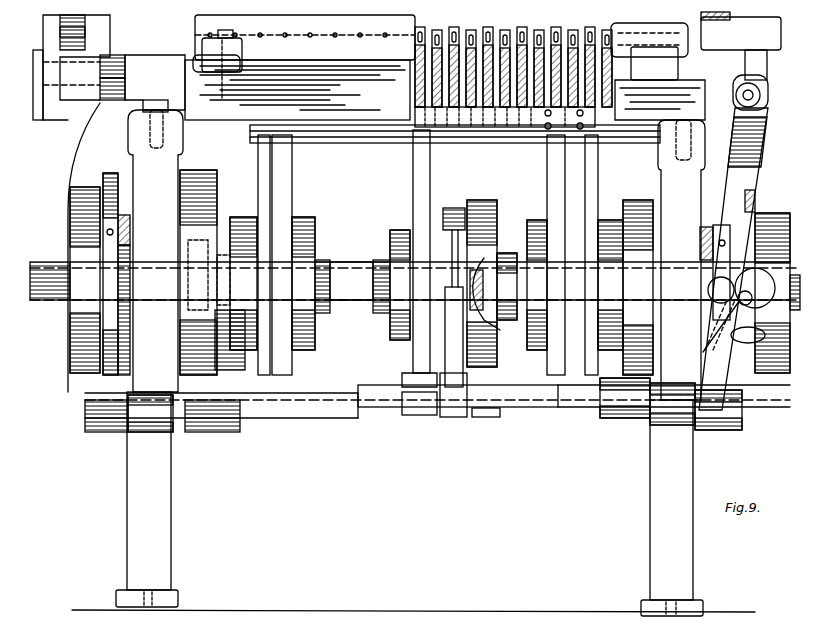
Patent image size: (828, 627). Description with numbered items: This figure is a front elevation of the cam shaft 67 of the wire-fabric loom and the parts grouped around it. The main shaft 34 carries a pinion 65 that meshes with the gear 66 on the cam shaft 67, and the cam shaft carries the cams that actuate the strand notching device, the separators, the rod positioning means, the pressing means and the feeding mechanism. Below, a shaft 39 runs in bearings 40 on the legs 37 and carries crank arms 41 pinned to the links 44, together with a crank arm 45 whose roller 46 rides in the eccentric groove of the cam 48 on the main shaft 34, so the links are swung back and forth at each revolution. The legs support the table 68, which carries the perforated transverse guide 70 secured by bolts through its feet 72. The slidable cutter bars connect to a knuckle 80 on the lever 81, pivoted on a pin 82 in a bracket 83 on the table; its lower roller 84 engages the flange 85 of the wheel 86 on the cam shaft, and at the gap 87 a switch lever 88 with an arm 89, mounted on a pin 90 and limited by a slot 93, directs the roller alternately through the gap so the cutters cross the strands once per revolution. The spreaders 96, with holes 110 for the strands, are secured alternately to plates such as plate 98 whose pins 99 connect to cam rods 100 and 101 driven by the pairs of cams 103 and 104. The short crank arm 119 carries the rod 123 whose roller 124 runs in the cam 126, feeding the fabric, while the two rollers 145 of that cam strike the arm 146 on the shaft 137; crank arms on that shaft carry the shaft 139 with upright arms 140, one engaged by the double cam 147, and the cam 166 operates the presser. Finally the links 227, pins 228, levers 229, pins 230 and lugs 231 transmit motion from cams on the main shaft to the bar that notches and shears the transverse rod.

The main shaft 34 is at (35, 302).
The legs 37 is at (409, 504).
The shaft 39 is at (310, 408).
The bearings 40 is at (157, 400).
The crank arms 41 is at (95, 385).
The links 44 is at (131, 228).
The crank arm 45 is at (232, 362).
The roller 46 is at (200, 275).
The cam 48 is at (210, 301).
The pinion 65 is at (131, 287).
The gear 66 is at (120, 200).
The cam shaft 67 is at (348, 282).
The table 68 is at (297, 90).
The transverse guide 70 is at (305, 37).
The feet 72 is at (205, 48).
The knuckle 80 is at (782, 32).
The lever 81 is at (756, 140).
The pin 82 is at (761, 96).
The bracket 83 is at (753, 91).
The roller 84 is at (707, 294).
The flange 85 is at (756, 204).
The wheel 86 is at (780, 238).
The gap 87 is at (775, 352).
The switch lever 88 is at (757, 287).
The arm 89 is at (704, 350).
The pin 90 is at (752, 298).
The slot 93 is at (760, 332).
The spreaders 96 is at (458, 32).
The plate 98 is at (497, 120).
The pins 99 is at (538, 143).
The cam rod 100 is at (268, 190).
The cam rod 101 is at (290, 192).
The cams 103 is at (254, 325).
The cams 104 is at (305, 348).
The holes 110 is at (548, 30).
The short crank arm 119 is at (483, 418).
The rod 123 is at (505, 255).
The roller 124 is at (495, 305).
The cam 126 is at (487, 204).
The shaft 137 is at (395, 392).
The shaft 139 is at (530, 410).
The upright arms 140 is at (226, 158).
The rollers 145 is at (452, 208).
The arm 146 is at (452, 345).
The double cam 147 is at (399, 230).
The cam 166 is at (622, 385).
The links 227 is at (82, 34).
The pins 228 is at (86, 24).
The levers 229 is at (68, 148).
The pins 230 is at (126, 76).
The lugs 231 is at (126, 92).